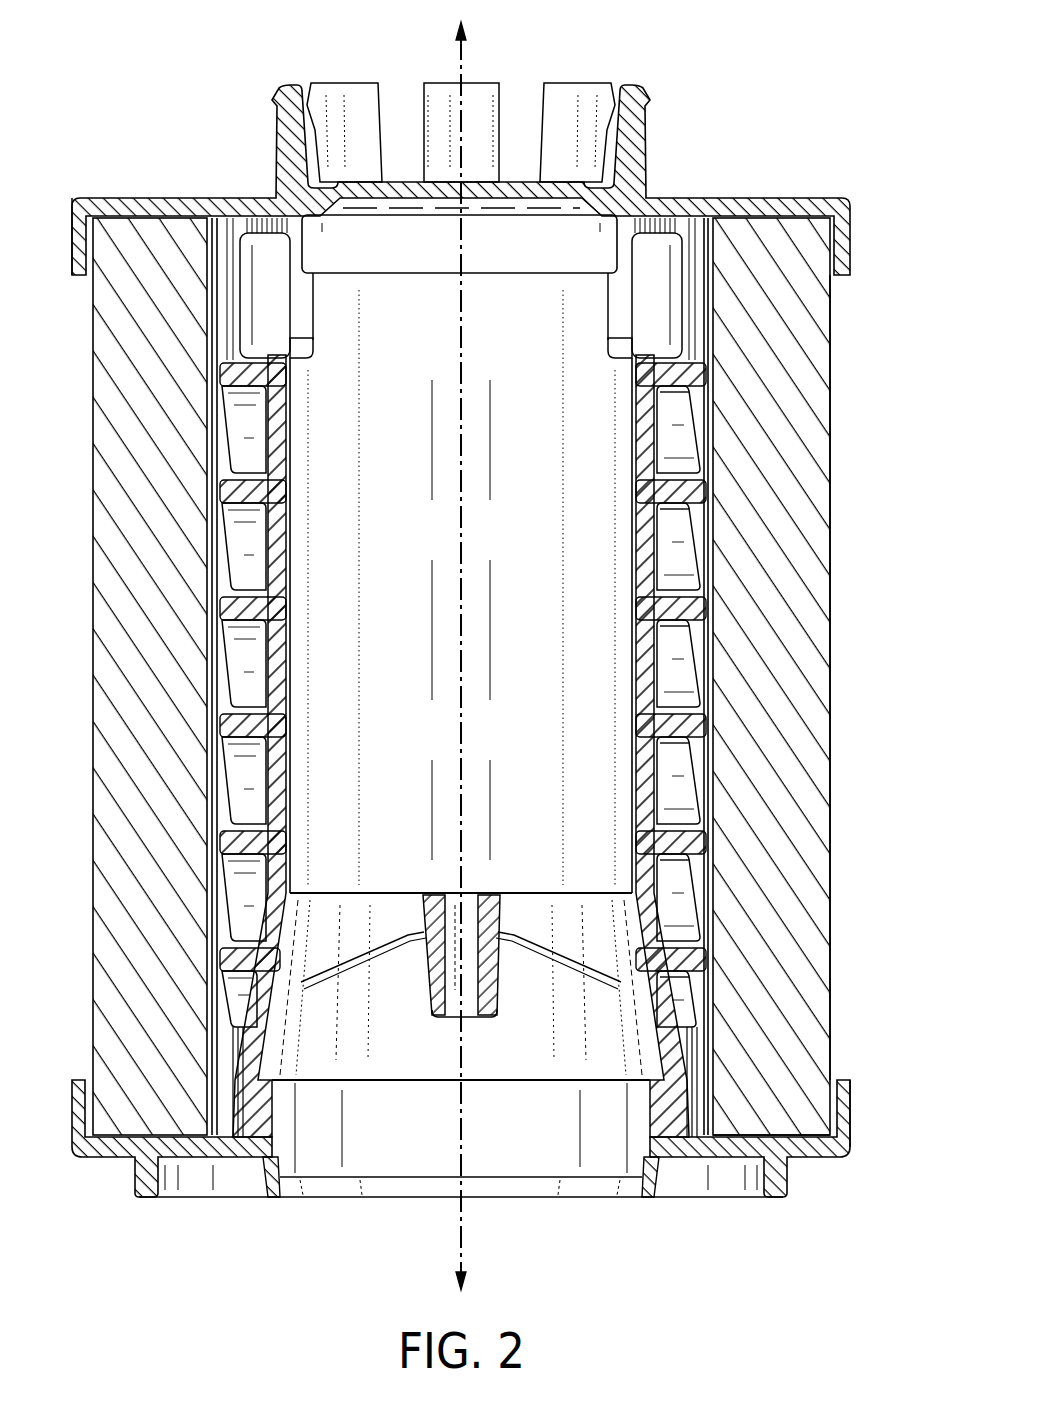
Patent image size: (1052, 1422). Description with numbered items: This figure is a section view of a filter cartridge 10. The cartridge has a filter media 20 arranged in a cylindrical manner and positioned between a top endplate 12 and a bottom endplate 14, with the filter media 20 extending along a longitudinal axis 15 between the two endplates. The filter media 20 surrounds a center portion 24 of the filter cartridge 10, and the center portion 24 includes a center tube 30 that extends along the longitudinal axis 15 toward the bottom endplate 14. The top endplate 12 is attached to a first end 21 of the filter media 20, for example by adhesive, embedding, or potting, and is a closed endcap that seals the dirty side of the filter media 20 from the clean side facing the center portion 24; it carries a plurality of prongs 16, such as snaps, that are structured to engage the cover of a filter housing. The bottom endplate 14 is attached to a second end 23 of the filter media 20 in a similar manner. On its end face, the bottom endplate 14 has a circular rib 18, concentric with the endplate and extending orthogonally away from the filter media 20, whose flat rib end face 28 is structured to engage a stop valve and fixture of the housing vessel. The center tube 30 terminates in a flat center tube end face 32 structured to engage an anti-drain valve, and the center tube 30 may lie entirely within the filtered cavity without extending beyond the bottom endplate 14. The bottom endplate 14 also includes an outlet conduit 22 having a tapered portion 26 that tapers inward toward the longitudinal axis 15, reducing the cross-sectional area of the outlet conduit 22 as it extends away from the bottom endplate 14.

The filter cartridge 10 is at (795, 60).
The top endplate 12 is at (812, 196).
The bottom endplate 14 is at (821, 1162).
The longitudinal axis 15 is at (468, 76).
The prongs 16 is at (641, 86).
The rib 18 is at (777, 1203).
The filter media 20 is at (797, 598).
The first end 21 is at (835, 318).
The outlet conduit 22 is at (274, 1206).
The second end 23 is at (810, 1080).
The center portion 24 is at (655, 532).
The tapered portion 26 is at (648, 1193).
The rib end face 28 is at (143, 1198).
The center tube 30 is at (498, 994).
The center tube end face 32 is at (441, 1020).